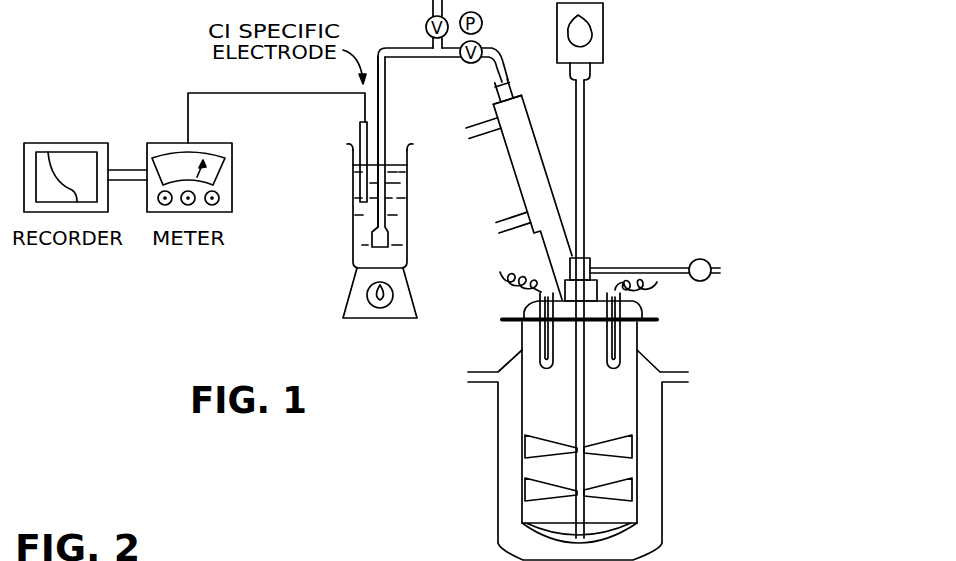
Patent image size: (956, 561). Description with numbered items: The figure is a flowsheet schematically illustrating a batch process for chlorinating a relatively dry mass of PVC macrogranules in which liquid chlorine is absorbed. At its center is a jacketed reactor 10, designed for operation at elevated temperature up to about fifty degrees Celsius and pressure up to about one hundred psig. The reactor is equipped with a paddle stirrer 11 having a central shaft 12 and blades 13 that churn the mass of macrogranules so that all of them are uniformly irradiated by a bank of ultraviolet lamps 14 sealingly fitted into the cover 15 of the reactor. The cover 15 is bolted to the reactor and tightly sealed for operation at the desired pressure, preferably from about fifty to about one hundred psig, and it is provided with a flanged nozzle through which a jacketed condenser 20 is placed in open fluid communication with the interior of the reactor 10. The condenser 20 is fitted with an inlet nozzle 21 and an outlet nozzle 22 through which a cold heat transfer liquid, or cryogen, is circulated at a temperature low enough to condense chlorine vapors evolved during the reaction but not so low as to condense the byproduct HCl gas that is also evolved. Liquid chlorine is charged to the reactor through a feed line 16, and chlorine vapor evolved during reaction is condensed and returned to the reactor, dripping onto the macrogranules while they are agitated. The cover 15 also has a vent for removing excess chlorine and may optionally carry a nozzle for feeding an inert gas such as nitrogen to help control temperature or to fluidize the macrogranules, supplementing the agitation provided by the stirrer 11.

The jacketed reactor 10 is at (666, 472).
The paddle stirrer 11 is at (551, 421).
The central shaft 12 is at (588, 398).
The blades 13 is at (622, 435).
The bank of ultraviolet lamps 14 is at (540, 343).
The cover 15 is at (630, 310).
The feed line 16 is at (641, 267).
The jacketed condenser 20 is at (504, 167).
The inlet nozzle 21 is at (503, 214).
The outlet nozzle 22 is at (478, 124).